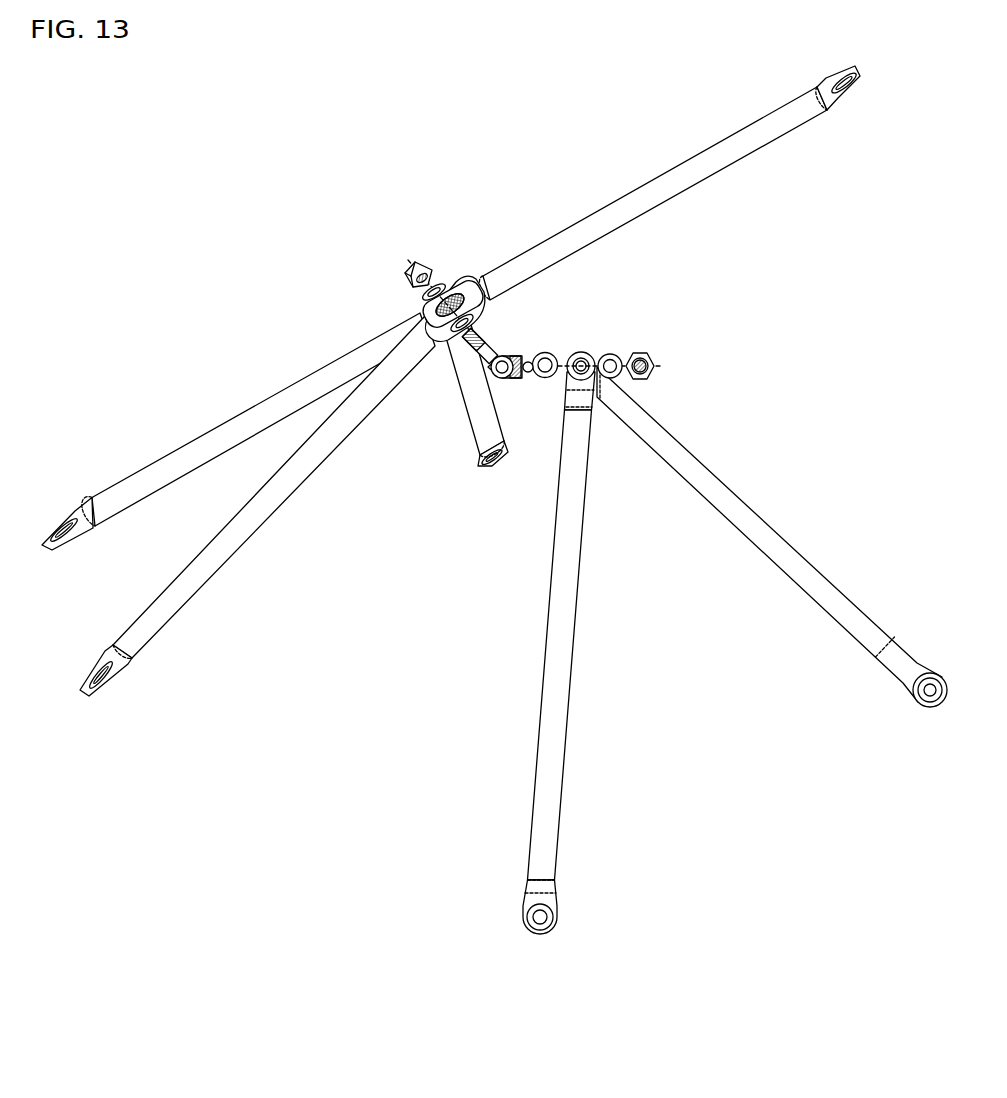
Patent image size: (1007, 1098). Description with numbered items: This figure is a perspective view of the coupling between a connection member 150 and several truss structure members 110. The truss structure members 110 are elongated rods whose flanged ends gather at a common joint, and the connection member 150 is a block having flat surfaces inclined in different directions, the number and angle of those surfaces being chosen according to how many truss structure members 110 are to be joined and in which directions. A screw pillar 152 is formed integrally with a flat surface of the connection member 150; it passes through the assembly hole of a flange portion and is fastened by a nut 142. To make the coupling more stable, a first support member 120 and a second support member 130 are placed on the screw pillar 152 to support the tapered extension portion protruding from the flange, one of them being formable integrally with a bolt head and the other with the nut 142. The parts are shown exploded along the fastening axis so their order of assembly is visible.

The truss structure member 110 is at (716, 173).
The first support member 120 is at (474, 320).
The second support member 130 is at (447, 282).
The nut 142 is at (430, 258).
The connection member 150 is at (506, 379).
The screw pillar 152 is at (497, 355).